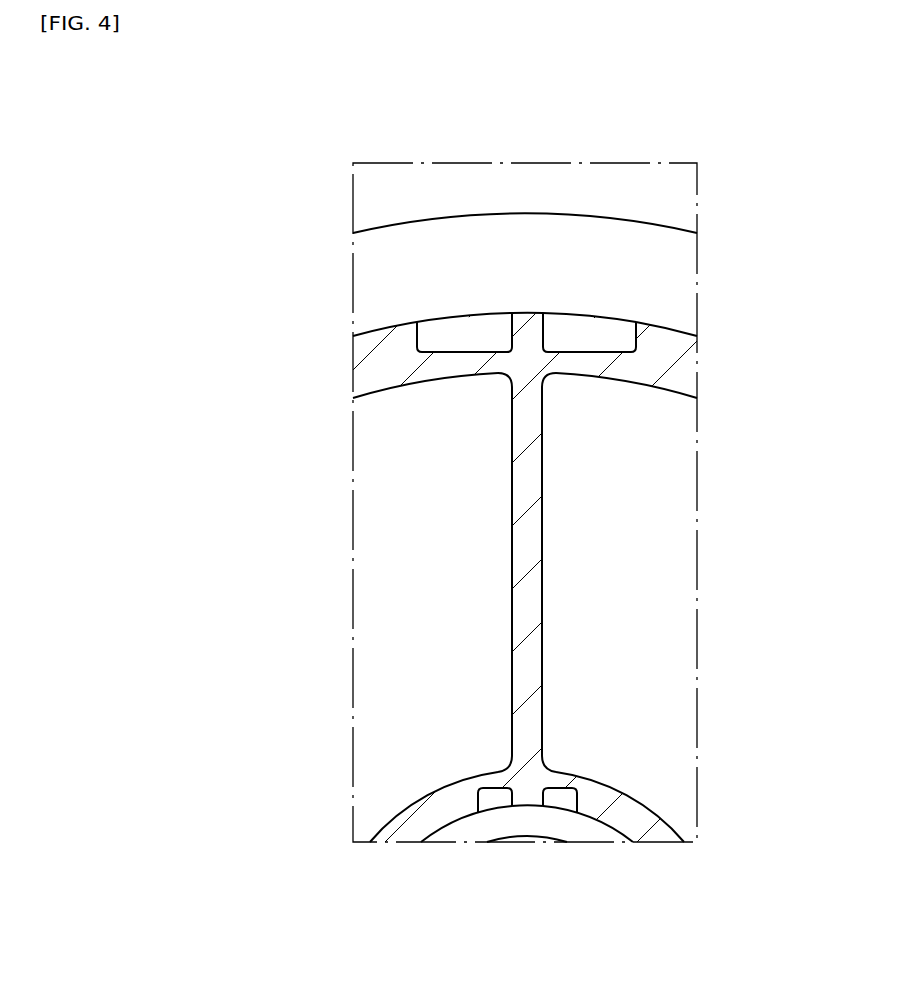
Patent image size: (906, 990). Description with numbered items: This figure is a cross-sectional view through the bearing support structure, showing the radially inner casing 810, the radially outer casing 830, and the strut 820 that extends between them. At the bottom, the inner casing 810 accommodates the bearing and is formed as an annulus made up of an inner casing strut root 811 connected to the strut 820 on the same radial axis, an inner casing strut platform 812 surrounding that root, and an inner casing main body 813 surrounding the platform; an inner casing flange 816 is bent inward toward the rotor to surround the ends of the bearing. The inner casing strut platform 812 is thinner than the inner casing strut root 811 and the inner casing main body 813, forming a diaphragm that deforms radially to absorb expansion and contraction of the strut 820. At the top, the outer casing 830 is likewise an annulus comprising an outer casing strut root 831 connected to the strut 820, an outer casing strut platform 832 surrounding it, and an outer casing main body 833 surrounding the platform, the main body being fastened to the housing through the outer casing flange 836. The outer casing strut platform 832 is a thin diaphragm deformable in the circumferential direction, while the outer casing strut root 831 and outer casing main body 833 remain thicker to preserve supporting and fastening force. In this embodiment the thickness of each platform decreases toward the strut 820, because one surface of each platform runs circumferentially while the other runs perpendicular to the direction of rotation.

The inner casing 810 is at (390, 810).
The inner casing strut root 811 is at (527, 797).
The inner casing strut platform 812 is at (552, 775).
The inner casing main body 813 is at (618, 828).
The inner casing flange 816 is at (467, 832).
The strut 820 is at (495, 537).
The outer casing 830 is at (340, 372).
The outer casing strut root 831 is at (527, 347).
The outer casing strut platform 832 is at (586, 367).
The outer casing main body 833 is at (655, 355).
The outer casing flange 836 is at (684, 266).